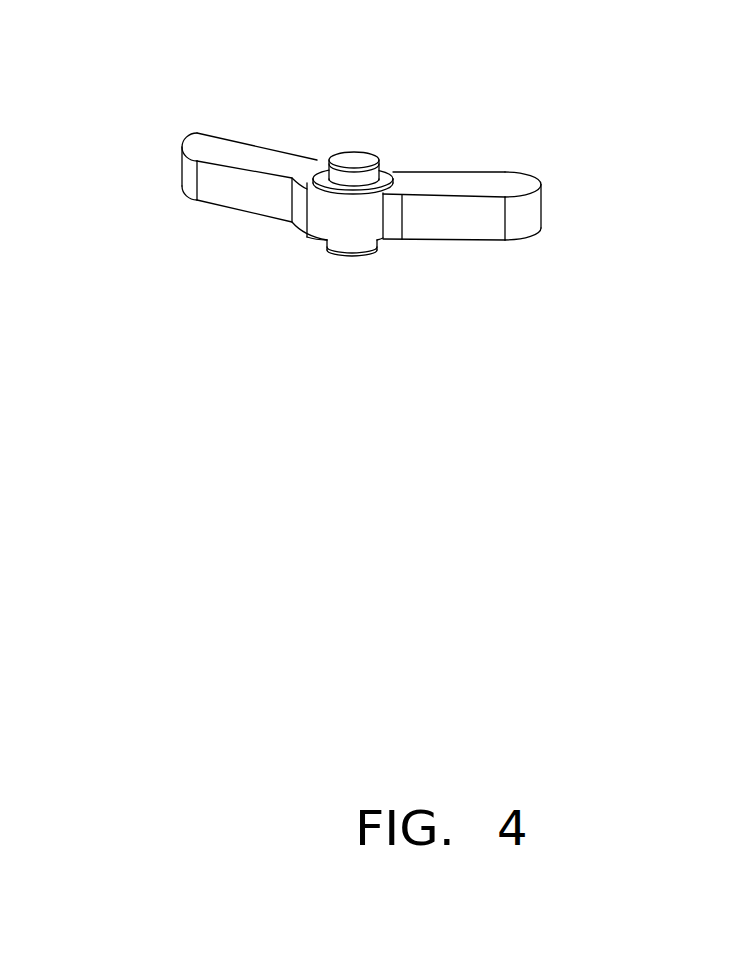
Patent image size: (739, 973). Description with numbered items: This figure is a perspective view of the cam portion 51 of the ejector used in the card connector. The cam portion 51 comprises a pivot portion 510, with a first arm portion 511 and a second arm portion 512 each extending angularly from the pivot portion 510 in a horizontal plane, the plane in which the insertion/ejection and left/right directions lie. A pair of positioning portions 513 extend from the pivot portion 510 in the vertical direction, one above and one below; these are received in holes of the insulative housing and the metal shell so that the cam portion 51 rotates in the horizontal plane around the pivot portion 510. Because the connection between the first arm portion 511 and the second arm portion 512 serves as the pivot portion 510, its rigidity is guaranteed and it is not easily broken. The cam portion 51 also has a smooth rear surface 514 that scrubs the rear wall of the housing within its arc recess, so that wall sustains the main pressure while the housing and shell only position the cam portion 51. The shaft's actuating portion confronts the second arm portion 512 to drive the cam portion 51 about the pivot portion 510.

The cam portion 51 is at (173, 122).
The pivot portion 510 is at (322, 213).
The first arm portion 511 is at (207, 143).
The second arm portion 512 is at (510, 188).
The positioning portions 513 is at (355, 163).
The smooth rear surface 514 is at (357, 217).